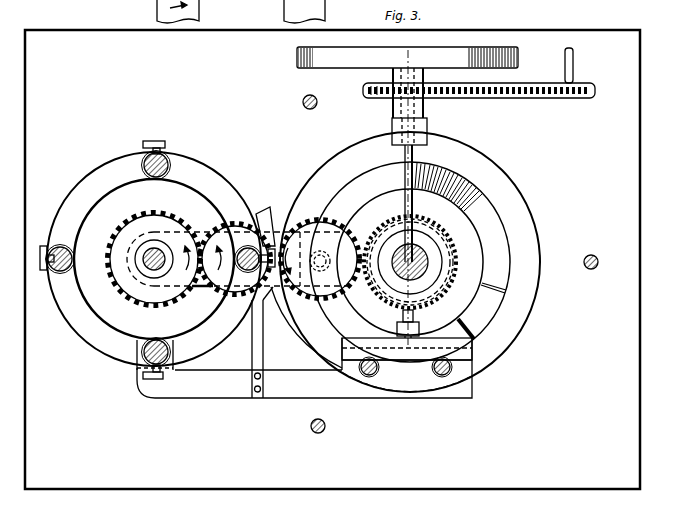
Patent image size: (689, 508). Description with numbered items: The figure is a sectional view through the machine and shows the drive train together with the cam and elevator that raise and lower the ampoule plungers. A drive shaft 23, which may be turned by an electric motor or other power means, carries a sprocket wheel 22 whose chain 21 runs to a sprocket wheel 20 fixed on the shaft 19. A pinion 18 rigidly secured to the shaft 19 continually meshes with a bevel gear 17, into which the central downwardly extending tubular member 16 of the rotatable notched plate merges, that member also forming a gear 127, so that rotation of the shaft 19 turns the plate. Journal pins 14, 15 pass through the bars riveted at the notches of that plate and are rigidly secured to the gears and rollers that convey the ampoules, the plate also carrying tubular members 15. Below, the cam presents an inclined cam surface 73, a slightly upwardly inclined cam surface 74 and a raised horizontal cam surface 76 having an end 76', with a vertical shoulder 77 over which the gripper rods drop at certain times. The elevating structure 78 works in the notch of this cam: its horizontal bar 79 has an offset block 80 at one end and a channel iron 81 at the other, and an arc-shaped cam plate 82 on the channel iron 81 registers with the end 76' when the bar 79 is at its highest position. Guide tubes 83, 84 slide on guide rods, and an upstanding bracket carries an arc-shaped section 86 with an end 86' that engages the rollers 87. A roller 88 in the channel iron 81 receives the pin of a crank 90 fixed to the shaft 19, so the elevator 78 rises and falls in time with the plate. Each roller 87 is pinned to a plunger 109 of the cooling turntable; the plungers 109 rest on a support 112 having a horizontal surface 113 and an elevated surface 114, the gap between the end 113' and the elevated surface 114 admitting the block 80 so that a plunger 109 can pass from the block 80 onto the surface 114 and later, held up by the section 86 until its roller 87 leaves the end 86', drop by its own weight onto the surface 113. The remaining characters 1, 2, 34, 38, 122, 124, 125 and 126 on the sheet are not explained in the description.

The case 1 is at (628, 184).
The fastening screws 2 is at (316, 100).
The journal pin 14 is at (178, 11).
The tubular downwardly extending member 15 is at (171, 166).
The central downwardly extending tubular member 16 is at (427, 276).
The bevel gear 17 is at (448, 240).
The pinion 18 is at (390, 312).
The shaft 19 is at (417, 152).
The sprocket wheel 20 is at (382, 97).
The chain 21 is at (524, 98).
The second sprocket wheel 22 is at (596, 91).
The drive shaft 23 is at (575, 64).
The shaft hub 34 is at (422, 268).
The bearing block 38 is at (428, 126).
The inclined cam surface 73 is at (486, 219).
The slightly upwardly inclined cam surface 74 is at (507, 291).
The raised horizontal cam surface 76 is at (410, 262).
The end of raised cam surface 76' is at (413, 399).
The vertical shoulder 77 is at (346, 300).
The elevating structure 78 is at (238, 391).
The horizontal bar 79 is at (385, 399).
The offset block 80 is at (168, 341).
The channel iron 81 is at (473, 350).
The arc-shaped cam plate 82 is at (450, 328).
The guide tube 83 is at (363, 376).
The guide tube 84 is at (436, 368).
The arc-shaped section 86 is at (288, 186).
The end of arc-shaped section 86' is at (269, 211).
The roller 87 is at (156, 141).
The roller 88 is at (402, 318).
The crank 90 is at (419, 328).
The plunger 109 is at (143, 166).
The support 112 is at (76, 334).
The horizontal surface 113 is at (77, 174).
The end of horizontal surface 113' is at (123, 373).
The elevated surface 114 is at (207, 341).
The hub 122 is at (148, 255).
The gear 124 is at (114, 277).
The intermediate gear 125 is at (201, 287).
The intermediate gear 126 is at (292, 292).
The gear 127 is at (360, 240).